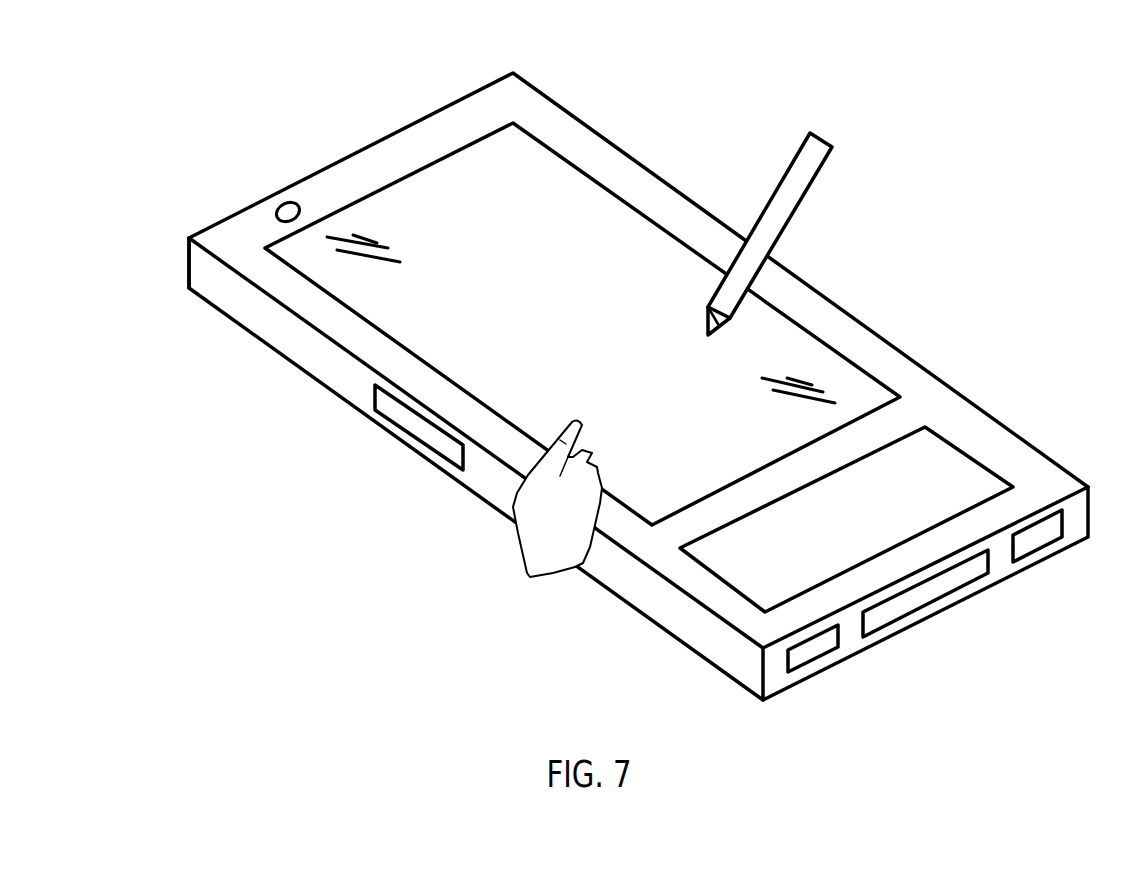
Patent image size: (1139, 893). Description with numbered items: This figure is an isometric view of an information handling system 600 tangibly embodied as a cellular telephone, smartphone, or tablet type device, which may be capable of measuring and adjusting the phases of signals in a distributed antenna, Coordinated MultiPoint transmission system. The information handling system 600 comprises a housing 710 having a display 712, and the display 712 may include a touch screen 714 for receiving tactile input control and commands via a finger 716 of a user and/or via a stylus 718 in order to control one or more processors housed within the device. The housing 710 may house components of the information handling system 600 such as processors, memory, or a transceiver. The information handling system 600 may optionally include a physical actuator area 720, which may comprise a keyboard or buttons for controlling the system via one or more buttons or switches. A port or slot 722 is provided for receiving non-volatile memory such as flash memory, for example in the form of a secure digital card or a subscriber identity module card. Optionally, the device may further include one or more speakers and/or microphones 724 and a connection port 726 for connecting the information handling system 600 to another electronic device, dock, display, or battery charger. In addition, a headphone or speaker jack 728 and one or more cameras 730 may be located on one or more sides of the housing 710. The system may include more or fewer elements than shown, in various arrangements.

The information handling system 600 is at (553, 97).
The housing 710 is at (452, 101).
The display 712 is at (486, 191).
The touch screen 714 is at (611, 327).
The finger 716 is at (573, 421).
The stylus 718 is at (787, 165).
The physical actuator area 720 is at (938, 475).
The port or slot 722 is at (395, 422).
The speakers and/or microphones 724 is at (817, 662).
The connection port 726 is at (942, 598).
The headphone or speaker jack 728 is at (215, 222).
The camera 730 is at (283, 201).